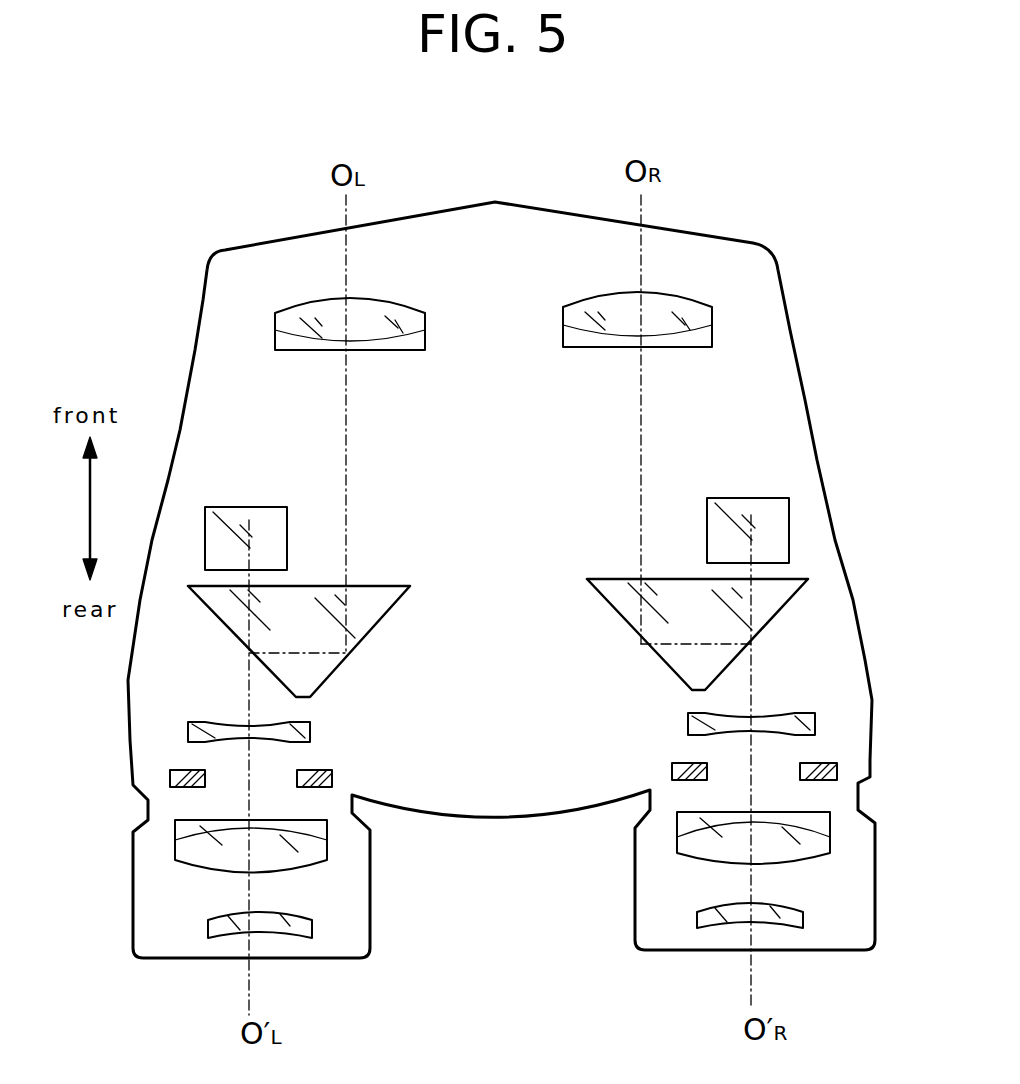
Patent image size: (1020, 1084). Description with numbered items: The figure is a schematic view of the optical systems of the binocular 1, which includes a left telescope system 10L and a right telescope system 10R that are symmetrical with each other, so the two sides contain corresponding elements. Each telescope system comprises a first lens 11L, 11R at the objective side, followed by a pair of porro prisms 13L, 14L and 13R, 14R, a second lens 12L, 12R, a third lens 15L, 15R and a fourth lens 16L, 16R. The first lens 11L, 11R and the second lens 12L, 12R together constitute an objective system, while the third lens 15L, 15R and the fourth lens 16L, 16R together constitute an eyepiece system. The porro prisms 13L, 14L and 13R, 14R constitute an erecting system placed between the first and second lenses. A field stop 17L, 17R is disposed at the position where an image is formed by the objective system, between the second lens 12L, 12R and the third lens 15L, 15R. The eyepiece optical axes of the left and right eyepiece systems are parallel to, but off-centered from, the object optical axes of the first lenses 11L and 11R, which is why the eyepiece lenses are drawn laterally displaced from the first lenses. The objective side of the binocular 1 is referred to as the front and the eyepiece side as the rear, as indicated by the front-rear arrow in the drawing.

The binocular 1 is at (706, 191).
The left telescope system 10L is at (166, 337).
The right telescope system 10R is at (905, 324).
The first lens 11L is at (317, 343).
The first lens 11R is at (663, 323).
The second lens 12L is at (311, 733).
The second lens 12R is at (688, 725).
The porro prism 13L is at (227, 622).
The porro prism 13R is at (768, 618).
The porro prism 14L is at (252, 480).
The porro prism 14R is at (748, 478).
The third lens 15L is at (187, 847).
The third lens 15R is at (820, 836).
The fourth lens 16L is at (227, 936).
The fourth lens 16R is at (785, 922).
The field stop 17L is at (170, 778).
The field stop 17R is at (837, 772).